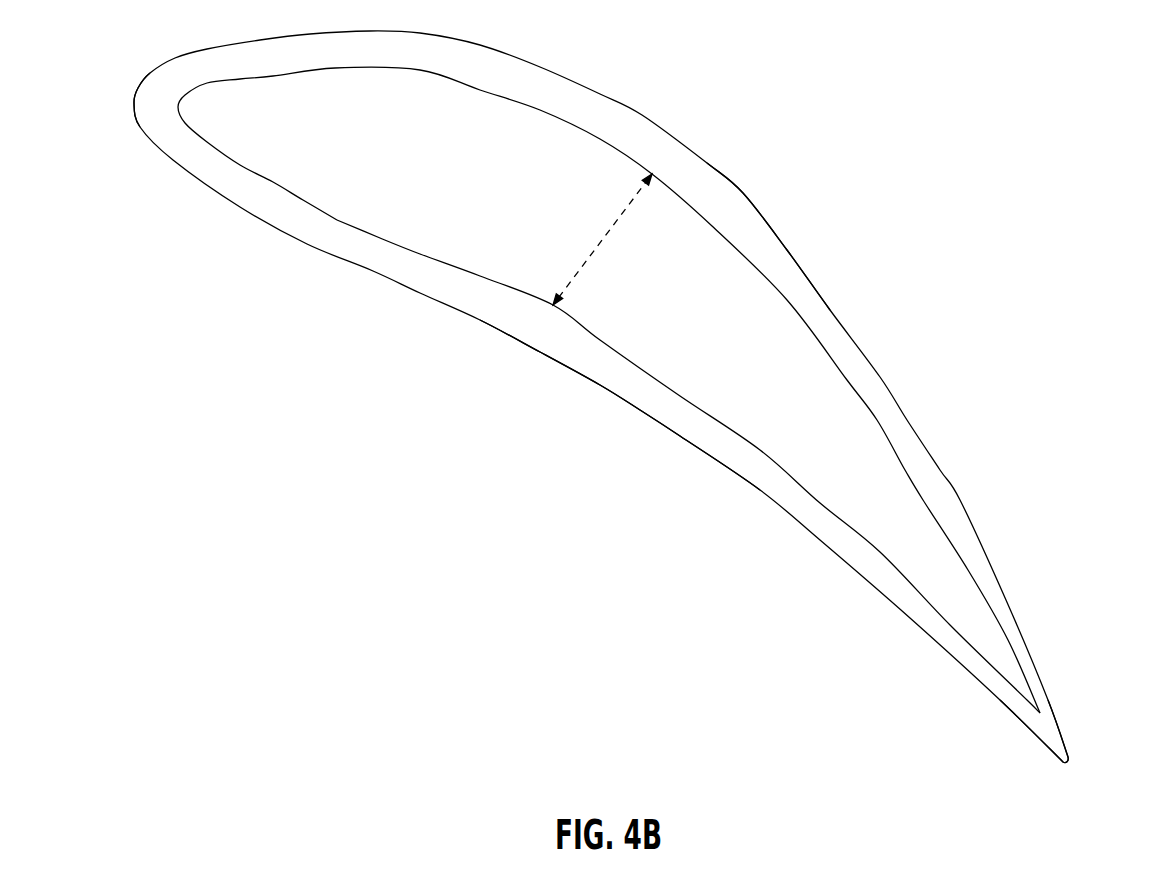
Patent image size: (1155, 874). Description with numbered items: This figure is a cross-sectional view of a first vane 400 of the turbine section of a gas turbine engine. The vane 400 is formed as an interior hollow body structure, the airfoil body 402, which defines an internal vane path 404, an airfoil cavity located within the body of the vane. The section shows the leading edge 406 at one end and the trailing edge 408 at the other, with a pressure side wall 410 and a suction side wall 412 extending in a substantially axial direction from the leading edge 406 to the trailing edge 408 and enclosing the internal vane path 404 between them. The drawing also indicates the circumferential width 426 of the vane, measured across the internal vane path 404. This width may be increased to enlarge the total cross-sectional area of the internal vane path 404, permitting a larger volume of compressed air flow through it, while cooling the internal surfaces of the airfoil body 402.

The first vane 400 is at (907, 45).
The airfoil body 402 is at (875, 388).
The internal vane path 404 is at (603, 180).
The leading edge 406 is at (138, 88).
The trailing edge 408 is at (1068, 758).
The pressure side wall 410 is at (599, 393).
The suction side wall 412 is at (745, 188).
The circumferential width 426 is at (594, 247).